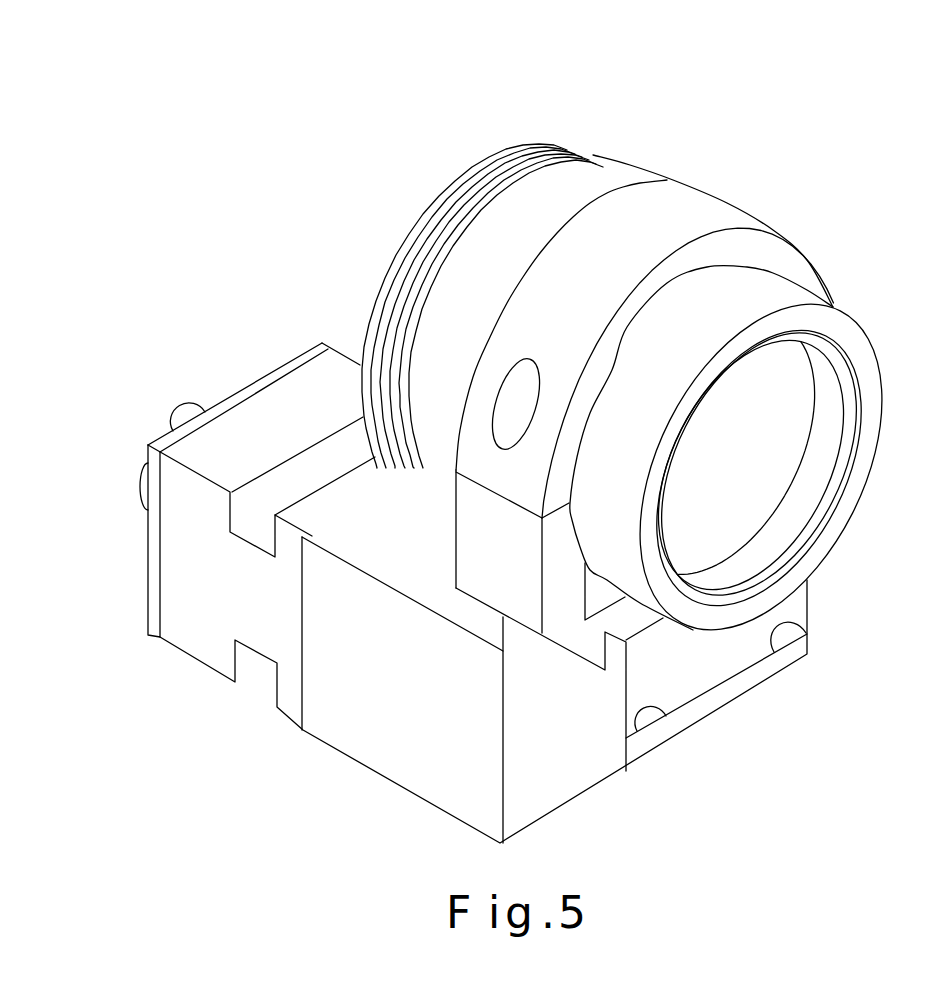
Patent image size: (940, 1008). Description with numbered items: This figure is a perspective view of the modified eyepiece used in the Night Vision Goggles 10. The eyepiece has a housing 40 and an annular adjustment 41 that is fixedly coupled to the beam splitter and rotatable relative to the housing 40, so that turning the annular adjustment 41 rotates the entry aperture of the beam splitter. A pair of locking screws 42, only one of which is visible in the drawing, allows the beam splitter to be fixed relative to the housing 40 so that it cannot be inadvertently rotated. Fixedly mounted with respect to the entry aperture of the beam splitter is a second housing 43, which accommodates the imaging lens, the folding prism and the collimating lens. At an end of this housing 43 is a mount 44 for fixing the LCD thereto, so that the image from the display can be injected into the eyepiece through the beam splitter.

The Night Vision Goggles 10 is at (544, 118).
The housing 40 is at (607, 178).
The annular adjustment 41 is at (697, 215).
The locking screws 42 is at (517, 397).
The housing 43 is at (545, 755).
The mount 44 is at (173, 414).